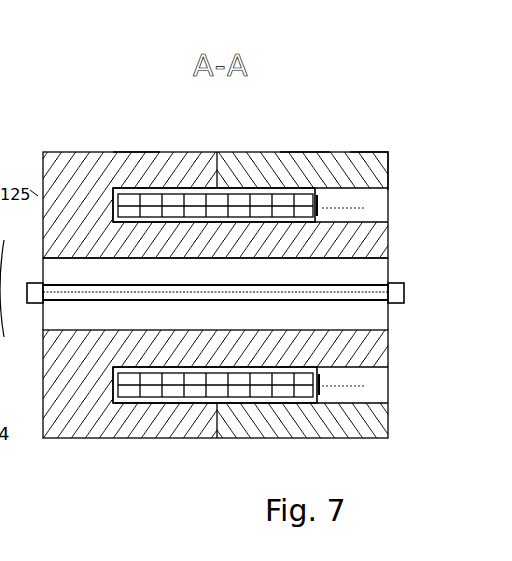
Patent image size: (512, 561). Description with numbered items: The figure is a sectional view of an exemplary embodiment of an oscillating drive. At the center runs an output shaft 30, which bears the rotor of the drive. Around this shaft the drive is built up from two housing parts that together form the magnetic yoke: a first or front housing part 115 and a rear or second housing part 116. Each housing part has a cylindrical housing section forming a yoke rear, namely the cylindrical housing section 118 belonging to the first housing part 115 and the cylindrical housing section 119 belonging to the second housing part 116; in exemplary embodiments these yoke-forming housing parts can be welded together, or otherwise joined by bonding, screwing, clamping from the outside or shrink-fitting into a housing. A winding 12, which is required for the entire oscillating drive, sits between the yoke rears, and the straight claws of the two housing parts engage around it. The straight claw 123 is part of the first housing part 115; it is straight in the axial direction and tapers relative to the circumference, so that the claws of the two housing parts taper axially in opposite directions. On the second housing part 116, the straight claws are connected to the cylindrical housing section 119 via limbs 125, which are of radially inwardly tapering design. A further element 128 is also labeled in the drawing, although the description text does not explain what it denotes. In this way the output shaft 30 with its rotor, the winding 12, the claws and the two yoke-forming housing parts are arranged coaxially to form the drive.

The winding 12 is at (187, 404).
The output shaft 30 is at (403, 285).
The first housing part 115 is at (78, 152).
The second housing part 116 is at (364, 152).
The cylindrical housing section 118 is at (128, 143).
The cylindrical housing section 119 is at (306, 144).
The straight claw 123 is at (390, 252).
The limb 125 is at (105, 216).
The lower mold half 128 is at (390, 355).